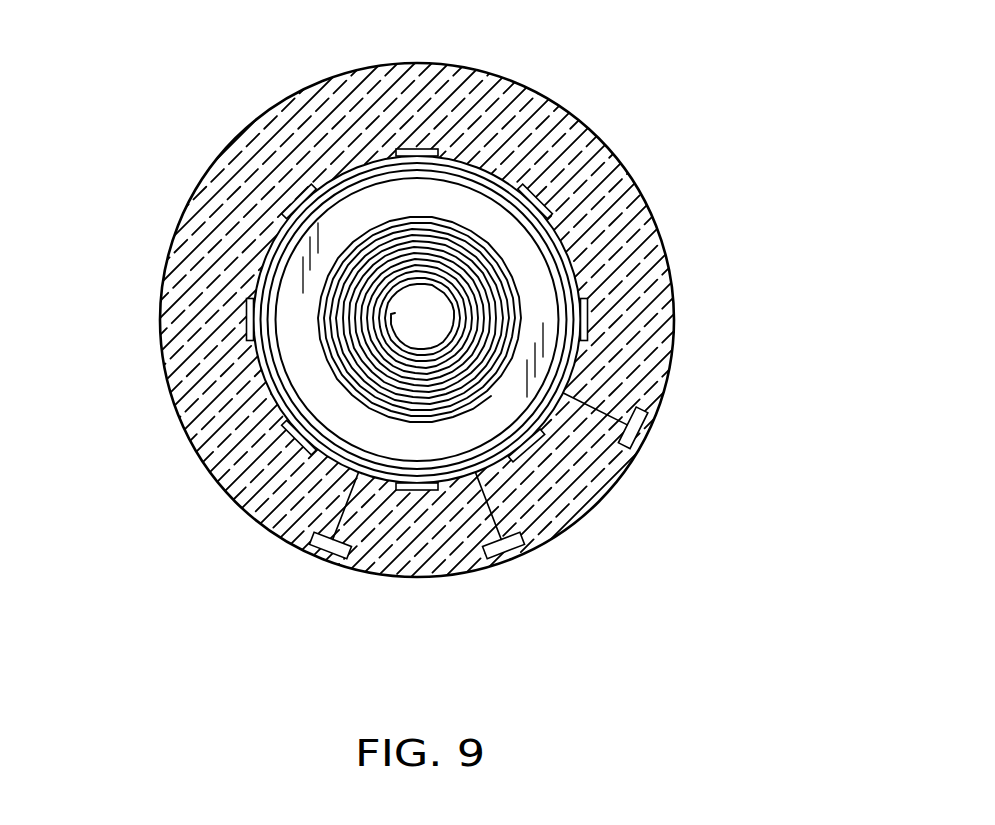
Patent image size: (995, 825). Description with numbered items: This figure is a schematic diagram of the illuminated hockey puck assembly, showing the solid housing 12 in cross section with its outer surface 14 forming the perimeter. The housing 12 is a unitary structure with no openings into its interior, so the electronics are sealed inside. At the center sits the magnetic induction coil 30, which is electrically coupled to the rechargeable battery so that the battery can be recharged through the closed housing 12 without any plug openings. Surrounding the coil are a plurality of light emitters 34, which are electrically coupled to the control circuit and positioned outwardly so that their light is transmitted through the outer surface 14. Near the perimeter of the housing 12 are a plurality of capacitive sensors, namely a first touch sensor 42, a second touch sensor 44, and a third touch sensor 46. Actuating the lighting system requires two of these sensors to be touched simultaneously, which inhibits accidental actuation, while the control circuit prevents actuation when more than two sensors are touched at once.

The housing 12 is at (205, 425).
The outer surface 14 is at (290, 545).
The magnetic induction coil 30 is at (490, 277).
The light emitters 34 is at (421, 150).
The first touch sensor 42 is at (328, 556).
The second touch sensor 44 is at (506, 558).
The third touch sensor 46 is at (648, 428).